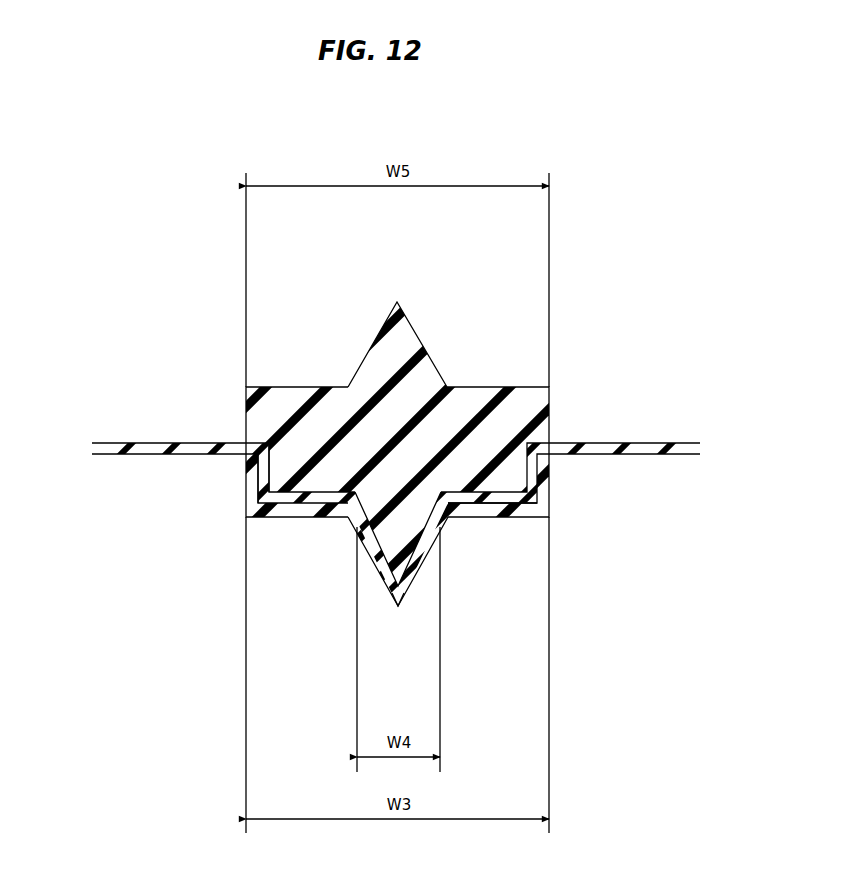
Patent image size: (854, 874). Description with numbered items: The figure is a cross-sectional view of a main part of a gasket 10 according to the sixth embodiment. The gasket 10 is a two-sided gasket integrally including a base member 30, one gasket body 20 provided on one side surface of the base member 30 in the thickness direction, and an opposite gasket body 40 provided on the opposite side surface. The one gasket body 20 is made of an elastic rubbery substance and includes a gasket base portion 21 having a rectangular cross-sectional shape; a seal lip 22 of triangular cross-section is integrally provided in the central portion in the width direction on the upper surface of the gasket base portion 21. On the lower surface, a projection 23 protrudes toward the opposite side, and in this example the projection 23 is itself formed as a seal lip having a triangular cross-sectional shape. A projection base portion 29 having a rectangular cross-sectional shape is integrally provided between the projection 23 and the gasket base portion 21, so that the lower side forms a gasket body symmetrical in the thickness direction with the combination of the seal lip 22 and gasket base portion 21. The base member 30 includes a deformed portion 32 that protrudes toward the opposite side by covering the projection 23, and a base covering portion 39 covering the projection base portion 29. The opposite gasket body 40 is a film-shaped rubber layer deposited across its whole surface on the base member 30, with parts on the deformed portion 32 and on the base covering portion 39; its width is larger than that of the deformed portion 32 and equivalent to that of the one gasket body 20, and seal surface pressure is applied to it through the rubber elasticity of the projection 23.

The gasket 10 is at (213, 375).
The one gasket body 20 is at (490, 385).
The gasket base portion 21 is at (523, 413).
The seal lip 22 is at (400, 345).
The projection 23 is at (393, 530).
The projection base portion 29 is at (290, 470).
The base member 30 is at (172, 443).
The deformed portion 32 is at (430, 550).
The base covering portion 39 is at (518, 512).
The opposite gasket body 40 is at (408, 592).